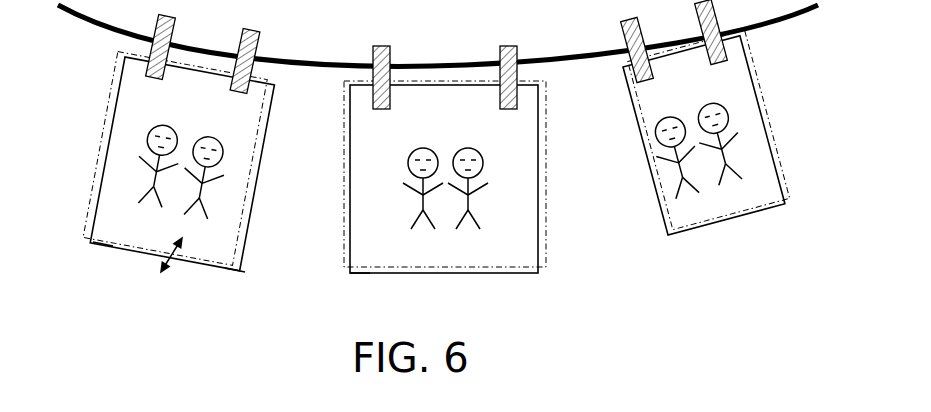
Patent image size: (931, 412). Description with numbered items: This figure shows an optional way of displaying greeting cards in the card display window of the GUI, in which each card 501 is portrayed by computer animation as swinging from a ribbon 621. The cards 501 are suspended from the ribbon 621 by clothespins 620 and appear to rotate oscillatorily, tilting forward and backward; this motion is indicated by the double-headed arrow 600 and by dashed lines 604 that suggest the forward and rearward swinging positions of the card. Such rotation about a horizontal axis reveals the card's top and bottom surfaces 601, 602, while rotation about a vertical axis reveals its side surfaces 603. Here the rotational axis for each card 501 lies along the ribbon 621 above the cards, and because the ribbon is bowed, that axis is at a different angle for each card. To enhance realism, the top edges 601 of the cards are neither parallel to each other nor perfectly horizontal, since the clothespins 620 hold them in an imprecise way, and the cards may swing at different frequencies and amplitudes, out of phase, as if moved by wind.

The card 501 is at (349, 276).
The double-headed arrow 600 is at (170, 272).
The top surface 601 is at (262, 79).
The bottom surface 602 is at (113, 248).
The side surfaces 603 is at (112, 140).
The dashed lines 604 is at (345, 242).
The clothespins 620 is at (500, 45).
The ribbon 621 is at (575, 50).